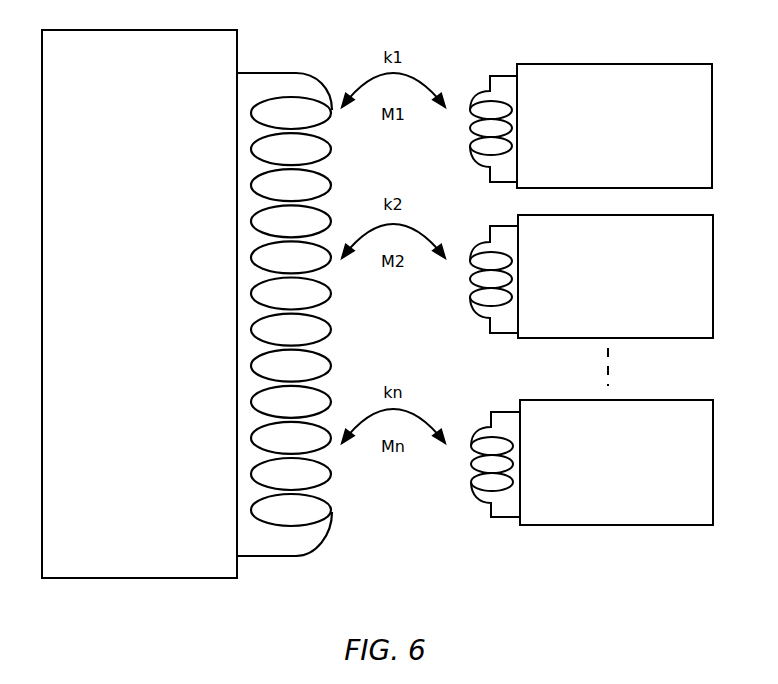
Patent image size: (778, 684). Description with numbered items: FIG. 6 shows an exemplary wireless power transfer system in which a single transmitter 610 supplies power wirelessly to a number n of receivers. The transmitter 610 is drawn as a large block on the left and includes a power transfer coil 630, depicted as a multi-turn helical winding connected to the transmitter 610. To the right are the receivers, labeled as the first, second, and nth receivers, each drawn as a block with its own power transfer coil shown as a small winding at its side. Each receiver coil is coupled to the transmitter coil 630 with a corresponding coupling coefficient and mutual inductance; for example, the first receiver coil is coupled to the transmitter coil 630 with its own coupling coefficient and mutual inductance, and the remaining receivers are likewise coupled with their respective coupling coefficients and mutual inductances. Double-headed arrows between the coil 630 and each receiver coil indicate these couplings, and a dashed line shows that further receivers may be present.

The transmitter 610 is at (139, 304).
The power transfer coil 630 is at (287, 62).